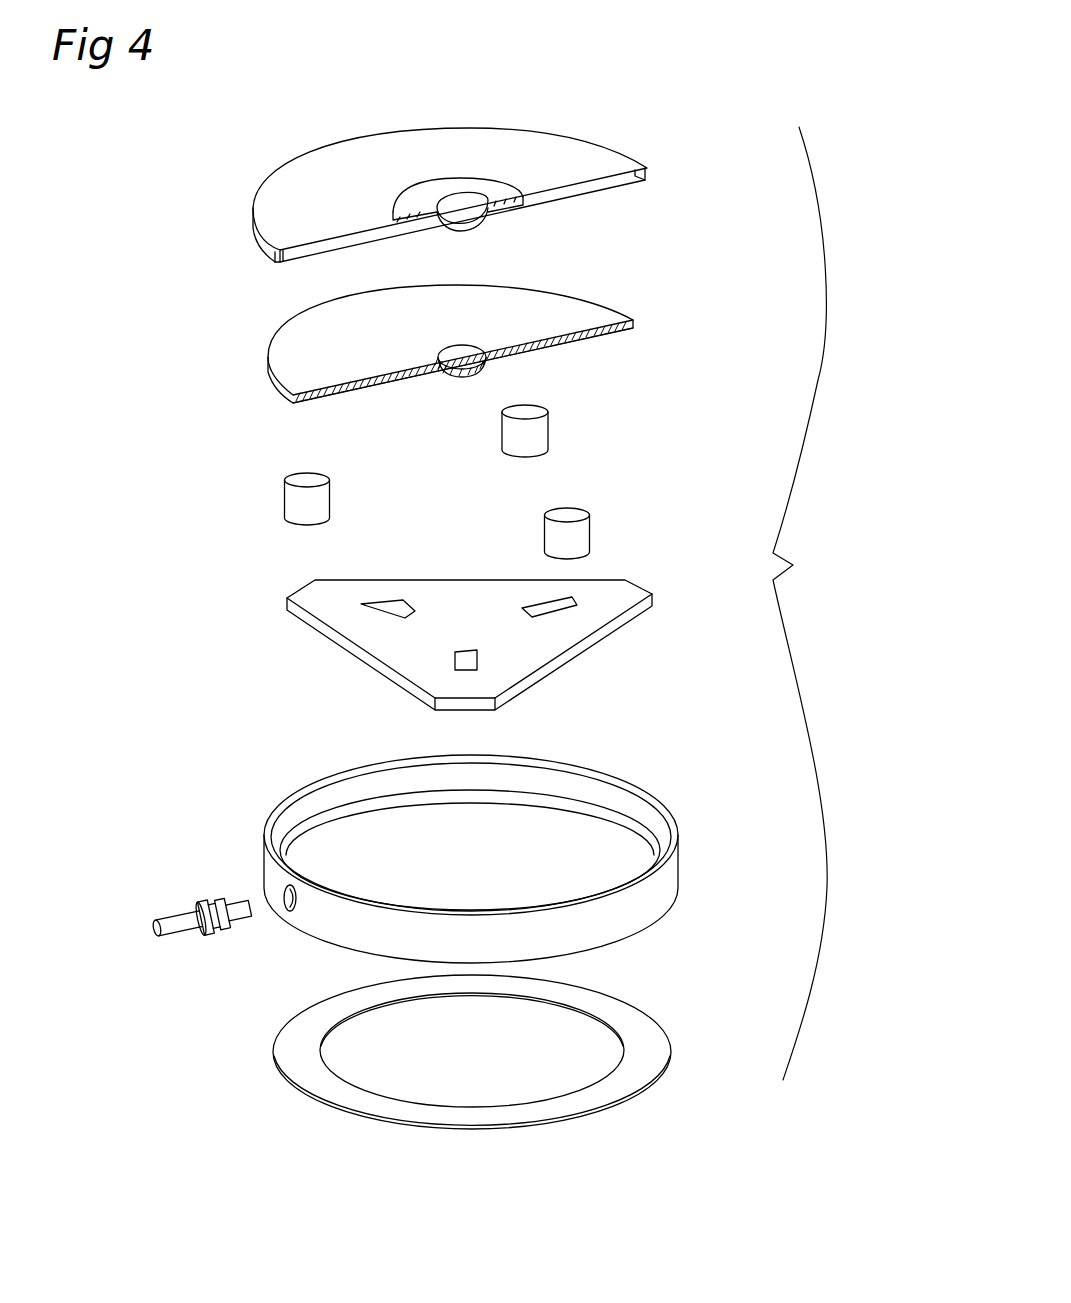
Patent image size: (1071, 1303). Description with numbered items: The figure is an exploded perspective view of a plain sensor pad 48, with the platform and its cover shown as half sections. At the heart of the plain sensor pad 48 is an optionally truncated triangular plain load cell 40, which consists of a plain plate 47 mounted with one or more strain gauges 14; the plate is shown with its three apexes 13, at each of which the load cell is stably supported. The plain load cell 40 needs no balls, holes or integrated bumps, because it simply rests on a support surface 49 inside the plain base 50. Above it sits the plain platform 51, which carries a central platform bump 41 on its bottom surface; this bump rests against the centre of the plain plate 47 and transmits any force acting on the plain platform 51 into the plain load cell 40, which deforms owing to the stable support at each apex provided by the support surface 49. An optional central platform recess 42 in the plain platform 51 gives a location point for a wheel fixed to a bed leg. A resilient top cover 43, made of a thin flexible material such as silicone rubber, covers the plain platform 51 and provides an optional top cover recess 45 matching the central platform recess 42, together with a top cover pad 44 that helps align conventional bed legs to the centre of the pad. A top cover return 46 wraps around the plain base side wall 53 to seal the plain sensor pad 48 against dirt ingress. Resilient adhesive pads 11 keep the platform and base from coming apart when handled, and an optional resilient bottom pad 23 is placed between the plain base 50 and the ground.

The resilient adhesive pads 11 is at (537, 433).
The apexes 13 is at (419, 615).
The strain gauges 14 is at (387, 603).
The resilient bottom pad 23 is at (648, 1057).
The plain load cell 40 is at (459, 595).
The central platform bump 41 is at (455, 380).
The central platform recess 42 is at (467, 352).
The resilient top cover 43 is at (525, 152).
The top cover pad 44 is at (488, 183).
The top cover recess 45 is at (457, 200).
The top cover return 46 is at (650, 176).
The plain plate 47 is at (538, 642).
The plain sensor pad 48 is at (804, 603).
The support surface 49 is at (633, 818).
The plain base 50 is at (476, 842).
The plain platform 51 is at (516, 337).
The plain base side wall 53 is at (593, 925).